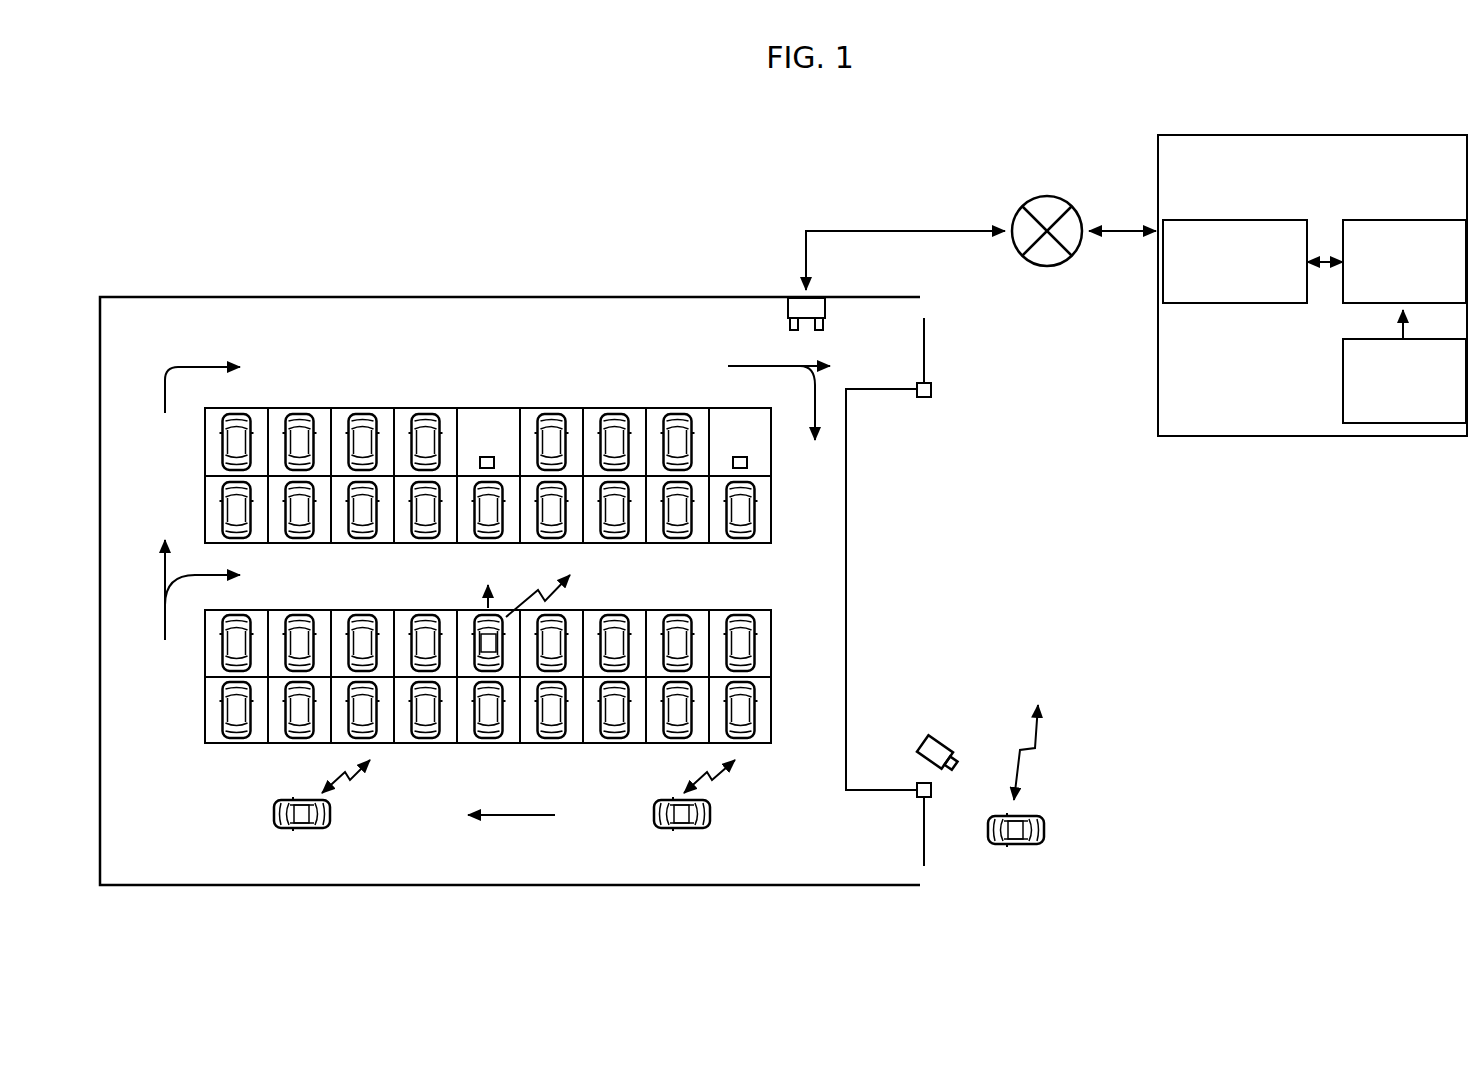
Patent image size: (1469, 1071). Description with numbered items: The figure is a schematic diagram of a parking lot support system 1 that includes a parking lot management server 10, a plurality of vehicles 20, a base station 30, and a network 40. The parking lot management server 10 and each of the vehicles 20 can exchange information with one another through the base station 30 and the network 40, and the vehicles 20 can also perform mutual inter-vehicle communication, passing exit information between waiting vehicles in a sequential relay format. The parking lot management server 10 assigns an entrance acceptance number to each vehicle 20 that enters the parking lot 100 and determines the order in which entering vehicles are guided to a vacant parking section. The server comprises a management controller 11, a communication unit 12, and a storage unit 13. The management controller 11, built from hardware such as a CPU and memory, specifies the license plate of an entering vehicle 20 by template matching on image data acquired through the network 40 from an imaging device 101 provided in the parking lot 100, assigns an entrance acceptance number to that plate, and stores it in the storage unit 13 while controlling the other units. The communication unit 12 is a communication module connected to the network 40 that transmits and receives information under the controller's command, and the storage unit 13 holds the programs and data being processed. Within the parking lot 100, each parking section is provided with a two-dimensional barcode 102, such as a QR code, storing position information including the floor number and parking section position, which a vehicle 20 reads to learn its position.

The parking lot support system 1 is at (242, 196).
The parking lot 100 is at (540, 297).
The two-dimensional barcode 102 is at (487, 457).
The imaging device 101 is at (940, 740).
The vehicle 20 is at (478, 640).
The base station 30 is at (800, 297).
The network 40 is at (1047, 196).
The parking lot management server 10 is at (1406, 118).
The management controller 11 is at (1423, 204).
The communication unit 12 is at (1266, 204).
The storage unit 13 is at (1423, 323).